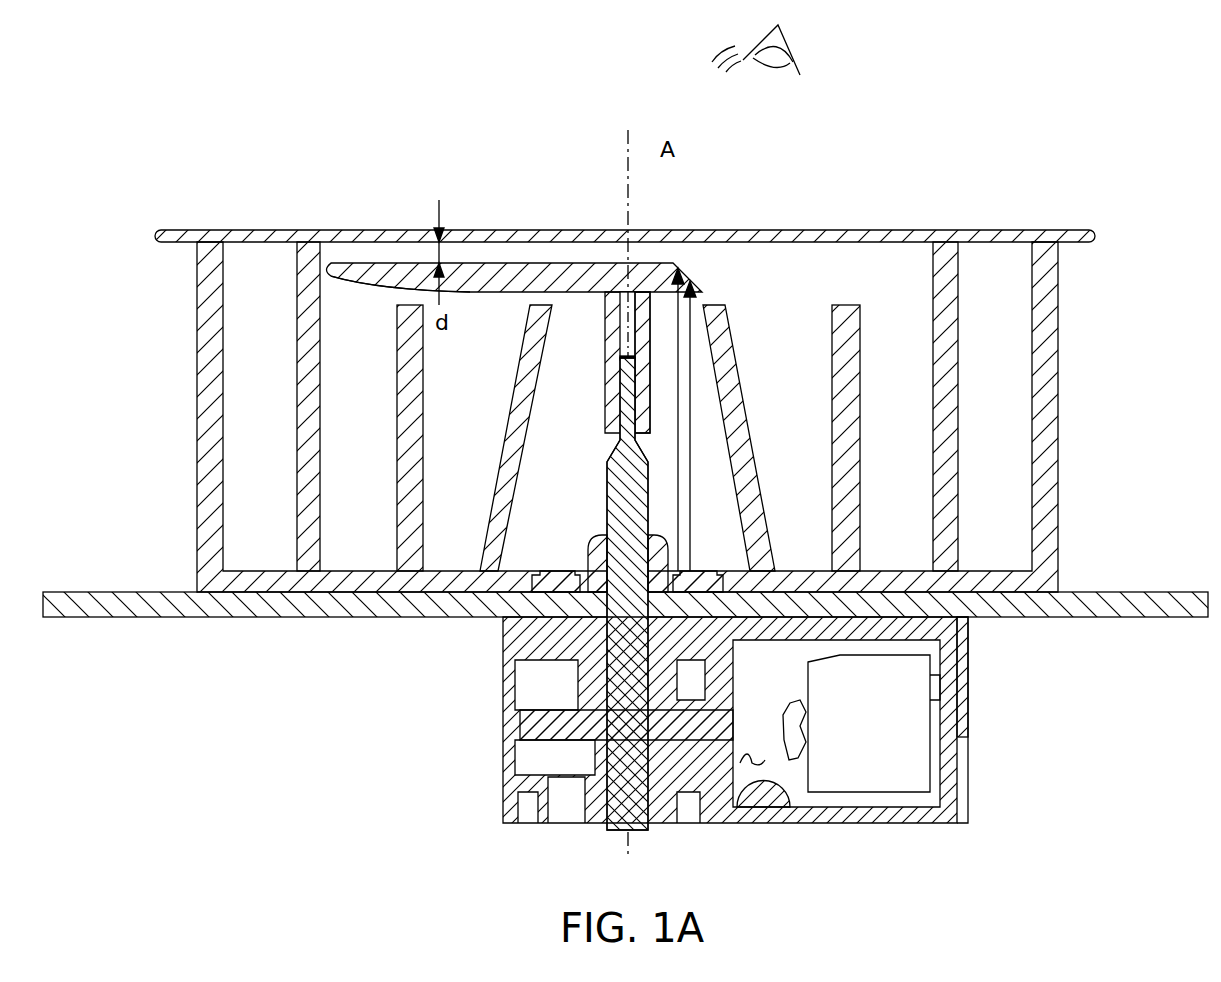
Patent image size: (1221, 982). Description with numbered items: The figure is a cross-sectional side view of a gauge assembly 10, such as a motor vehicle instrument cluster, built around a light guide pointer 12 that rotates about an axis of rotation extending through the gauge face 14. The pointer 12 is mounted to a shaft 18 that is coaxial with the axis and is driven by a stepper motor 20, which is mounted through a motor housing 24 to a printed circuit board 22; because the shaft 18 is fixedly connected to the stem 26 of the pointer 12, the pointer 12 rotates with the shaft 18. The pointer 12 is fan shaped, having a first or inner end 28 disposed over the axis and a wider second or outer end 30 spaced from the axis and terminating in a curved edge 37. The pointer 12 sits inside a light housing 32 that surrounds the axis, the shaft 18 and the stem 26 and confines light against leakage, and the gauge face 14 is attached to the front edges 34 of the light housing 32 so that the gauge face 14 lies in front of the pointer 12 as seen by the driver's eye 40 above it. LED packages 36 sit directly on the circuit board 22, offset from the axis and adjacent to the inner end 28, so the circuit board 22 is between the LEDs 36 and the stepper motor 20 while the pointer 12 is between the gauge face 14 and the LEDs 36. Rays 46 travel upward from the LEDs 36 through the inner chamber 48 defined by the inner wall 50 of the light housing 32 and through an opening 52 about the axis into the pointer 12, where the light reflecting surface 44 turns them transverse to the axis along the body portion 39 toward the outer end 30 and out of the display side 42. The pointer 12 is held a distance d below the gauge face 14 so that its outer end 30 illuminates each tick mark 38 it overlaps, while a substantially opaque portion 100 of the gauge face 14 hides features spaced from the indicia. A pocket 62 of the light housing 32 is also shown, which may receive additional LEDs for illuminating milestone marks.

The gauge assembly 10 is at (1020, 130).
The pointer 12 is at (519, 272).
The gauge face 14 is at (186, 233).
The shaft 18 is at (620, 498).
The stepper motor 20 is at (912, 665).
The printed circuit board 22 is at (1162, 605).
The motor housing 24 is at (950, 800).
The stem 26 is at (653, 326).
The first end 28 is at (625, 300).
The second end 30 is at (336, 279).
The light housing 32 is at (1068, 349).
The front edges 34 is at (199, 243).
The LED package 36 is at (547, 570).
The curved edge 37 is at (326, 272).
The tick mark 38 is at (365, 233).
The body portion 39 is at (457, 279).
The driver's eye 40 is at (772, 75).
The display side 42 is at (405, 263).
The light reflecting surface 44 is at (700, 281).
The rays 46 is at (690, 527).
The inner chamber 48 is at (585, 452).
The inner wall 50 is at (548, 352).
The opening 52 is at (590, 298).
The pocket 62 is at (905, 370).
The substantially opaque portion 100 is at (478, 233).